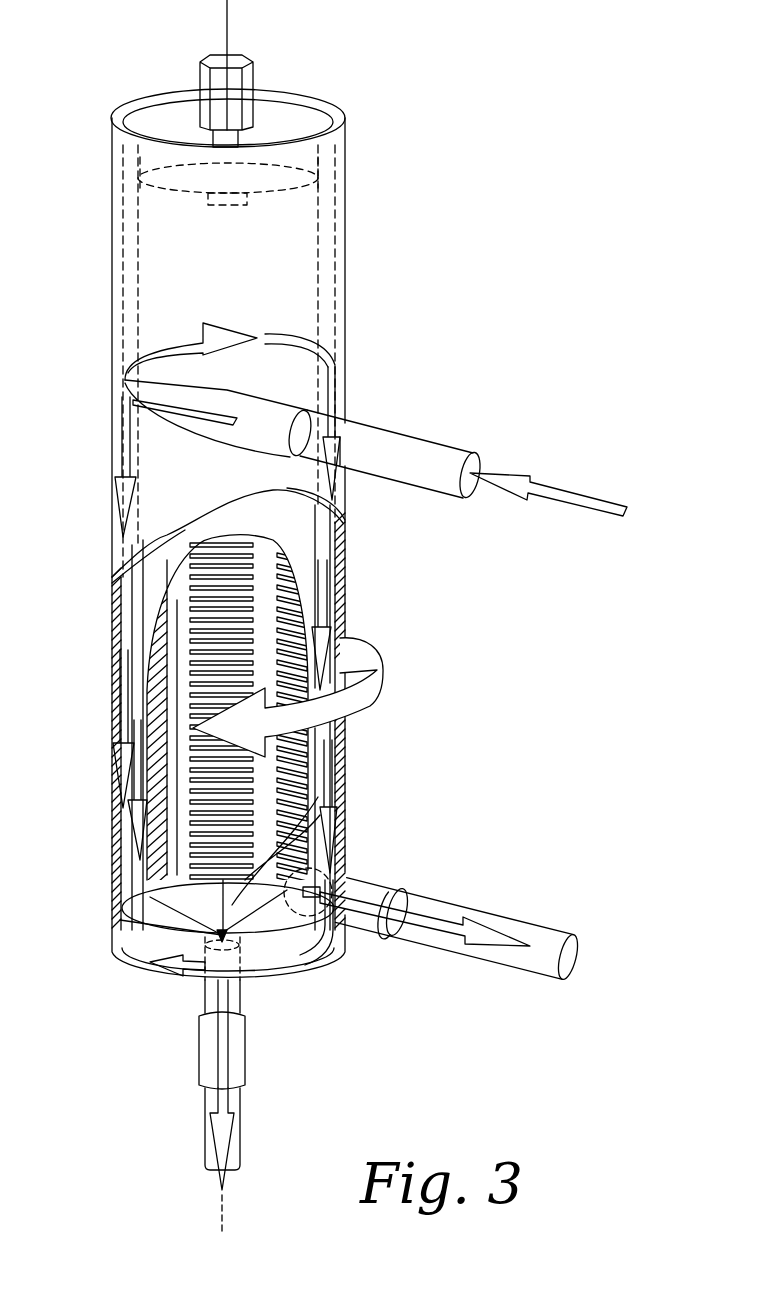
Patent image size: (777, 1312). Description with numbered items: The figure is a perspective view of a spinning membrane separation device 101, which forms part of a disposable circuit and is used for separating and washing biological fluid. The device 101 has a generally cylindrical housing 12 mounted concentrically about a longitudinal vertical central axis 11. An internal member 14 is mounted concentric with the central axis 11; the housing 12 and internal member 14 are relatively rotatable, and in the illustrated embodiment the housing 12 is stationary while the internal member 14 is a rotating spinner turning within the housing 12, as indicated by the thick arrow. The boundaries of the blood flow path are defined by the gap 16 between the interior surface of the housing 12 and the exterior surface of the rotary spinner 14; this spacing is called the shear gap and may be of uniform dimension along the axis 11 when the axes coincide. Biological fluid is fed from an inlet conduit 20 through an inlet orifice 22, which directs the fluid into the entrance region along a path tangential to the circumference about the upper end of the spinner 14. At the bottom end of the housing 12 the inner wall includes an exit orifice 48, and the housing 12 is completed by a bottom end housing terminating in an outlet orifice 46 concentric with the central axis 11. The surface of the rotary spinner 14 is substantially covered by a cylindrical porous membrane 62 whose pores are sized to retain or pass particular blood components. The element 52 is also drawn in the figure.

The spinning membrane separation device 101 is at (369, 202).
The central axis 11 is at (227, 15).
The cylindrical housing 12 is at (347, 260).
The internal member 14 is at (335, 302).
The gap 16 is at (345, 222).
The inlet conduit 20 is at (253, 405).
The inlet orifice 22 is at (307, 433).
The outlet orifice 46 is at (240, 993).
The exit orifice 48 is at (378, 888).
The filter element 52 is at (193, 808).
The cylindrical porous membrane 62 is at (302, 527).